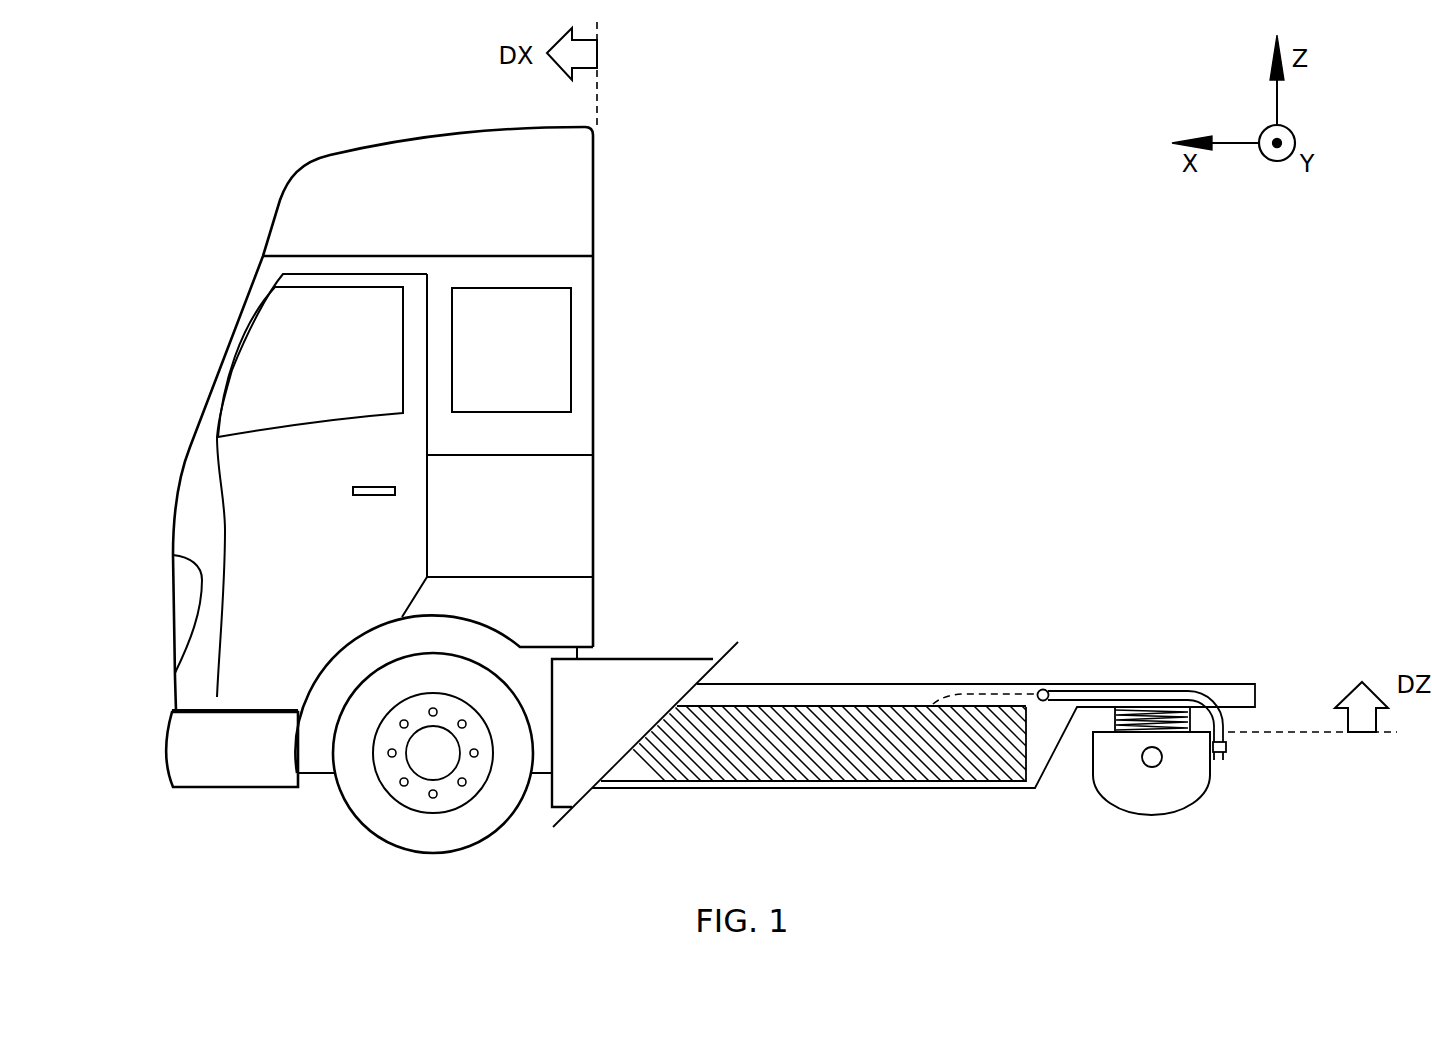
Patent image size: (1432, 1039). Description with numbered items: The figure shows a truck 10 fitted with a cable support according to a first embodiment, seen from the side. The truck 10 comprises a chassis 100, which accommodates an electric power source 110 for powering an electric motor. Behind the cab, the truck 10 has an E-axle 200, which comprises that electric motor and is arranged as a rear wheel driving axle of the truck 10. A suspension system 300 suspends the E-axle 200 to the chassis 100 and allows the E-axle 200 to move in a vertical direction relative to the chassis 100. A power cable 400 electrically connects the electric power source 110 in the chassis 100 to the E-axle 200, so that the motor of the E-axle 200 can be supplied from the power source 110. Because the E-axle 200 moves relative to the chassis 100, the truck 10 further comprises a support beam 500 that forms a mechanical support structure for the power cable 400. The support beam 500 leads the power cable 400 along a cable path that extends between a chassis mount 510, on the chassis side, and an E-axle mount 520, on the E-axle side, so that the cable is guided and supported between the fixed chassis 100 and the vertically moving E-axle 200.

The truck 10 is at (172, 216).
The chassis 100 is at (904, 674).
The electric power source 110 is at (811, 763).
The E-axle 200 is at (1199, 805).
The suspension system 300 is at (1108, 722).
The power cable 400 is at (1000, 687).
The support beam 500 is at (1205, 684).
The chassis mount 510 is at (1048, 685).
The E-axle mount 520 is at (1233, 752).